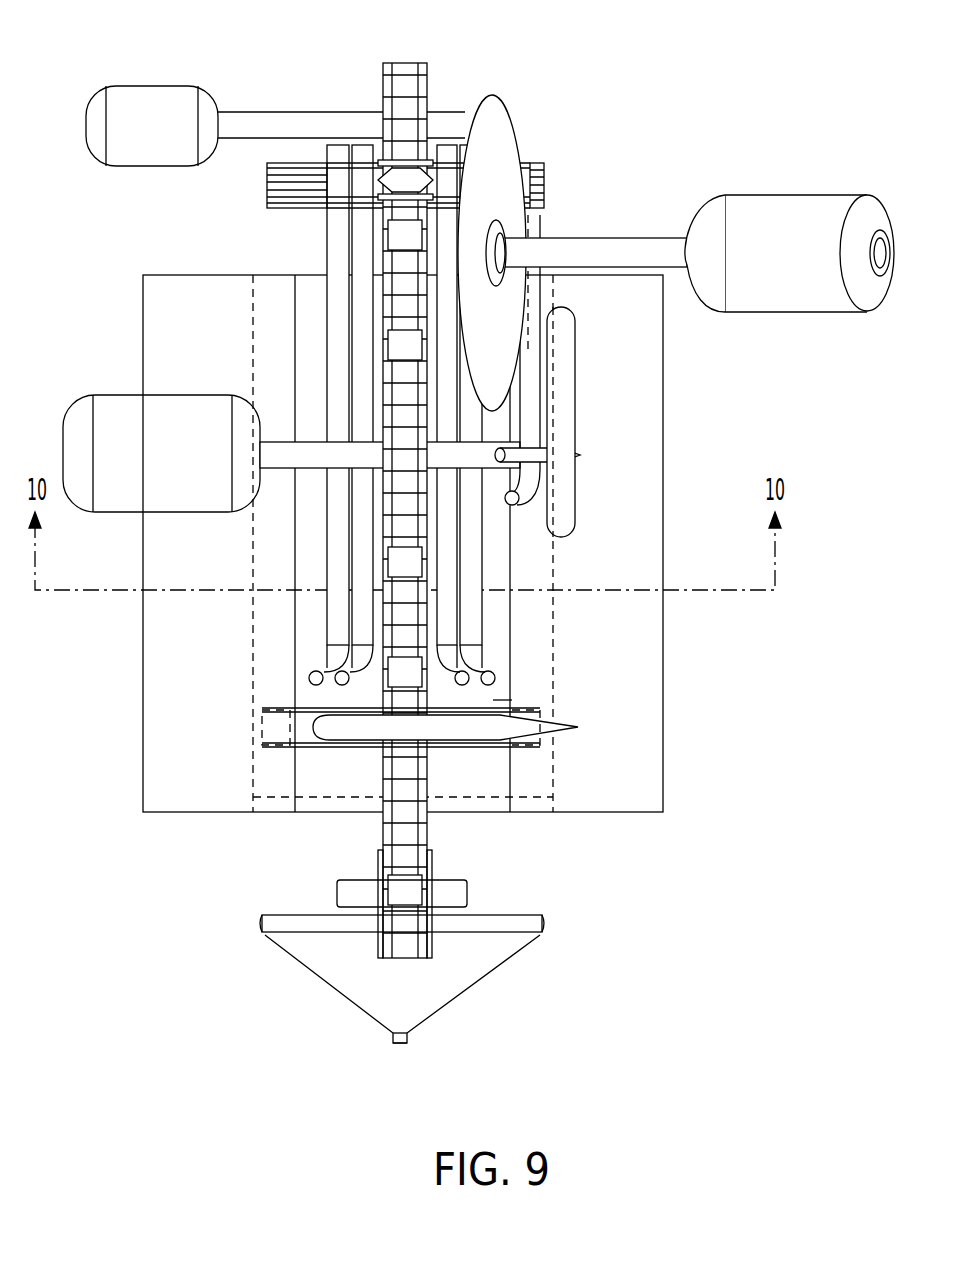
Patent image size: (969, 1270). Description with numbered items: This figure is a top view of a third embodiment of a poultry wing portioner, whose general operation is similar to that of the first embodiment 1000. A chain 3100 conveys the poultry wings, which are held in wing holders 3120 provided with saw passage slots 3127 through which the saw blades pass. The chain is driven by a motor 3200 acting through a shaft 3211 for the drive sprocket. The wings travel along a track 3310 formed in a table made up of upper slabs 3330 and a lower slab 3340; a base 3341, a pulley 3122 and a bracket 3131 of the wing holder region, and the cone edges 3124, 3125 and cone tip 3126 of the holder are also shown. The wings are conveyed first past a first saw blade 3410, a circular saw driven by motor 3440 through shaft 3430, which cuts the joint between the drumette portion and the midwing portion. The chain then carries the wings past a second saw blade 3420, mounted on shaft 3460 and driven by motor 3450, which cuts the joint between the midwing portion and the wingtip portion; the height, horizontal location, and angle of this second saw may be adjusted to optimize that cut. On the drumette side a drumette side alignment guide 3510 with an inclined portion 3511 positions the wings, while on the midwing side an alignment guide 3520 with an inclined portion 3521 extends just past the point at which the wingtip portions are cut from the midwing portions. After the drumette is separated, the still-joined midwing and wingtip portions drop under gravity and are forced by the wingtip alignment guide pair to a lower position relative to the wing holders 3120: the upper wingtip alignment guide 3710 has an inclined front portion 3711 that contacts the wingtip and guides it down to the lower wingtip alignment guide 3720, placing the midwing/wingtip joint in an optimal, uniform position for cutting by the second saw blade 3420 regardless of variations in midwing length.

The first embodiment 1000 is at (158, 870).
The chain 3100 is at (420, 400).
The wing holder 3120 is at (283, 163).
The pulley 3122 is at (268, 185).
The cone edge 3124 is at (262, 933).
The cone edge 3125 is at (542, 933).
The cone tip 3126 is at (395, 1045).
The saw passage slots 3127 is at (425, 162).
The bracket 3131 is at (262, 768).
The motor 3200 is at (152, 86).
The shaft 3211 is at (318, 108).
The track 3310 is at (512, 758).
The upper slabs 3330 is at (153, 737).
The lower slab 3340 is at (493, 700).
The base 3341 is at (325, 815).
The first saw blade 3410 is at (398, 405).
The second saw blade 3420 is at (522, 150).
The shaft 3430 is at (280, 473).
The motor 3440 is at (110, 395).
The motor 3450 is at (800, 195).
The shaft 3460 is at (648, 238).
The drumette side alignment guide 3510 is at (362, 303).
The inclined portion of drumette side alignment guide 3511 is at (342, 672).
The midwing side alignment guide 3520 is at (447, 507).
The inclined portion of midwing side alignment guide 3521 is at (467, 672).
The upper wingtip alignment guide 3710 is at (533, 432).
The inclined portion of upper wingtip alignment guide 3711 is at (518, 497).
The lower wingtip alignment guide 3720 is at (565, 348).